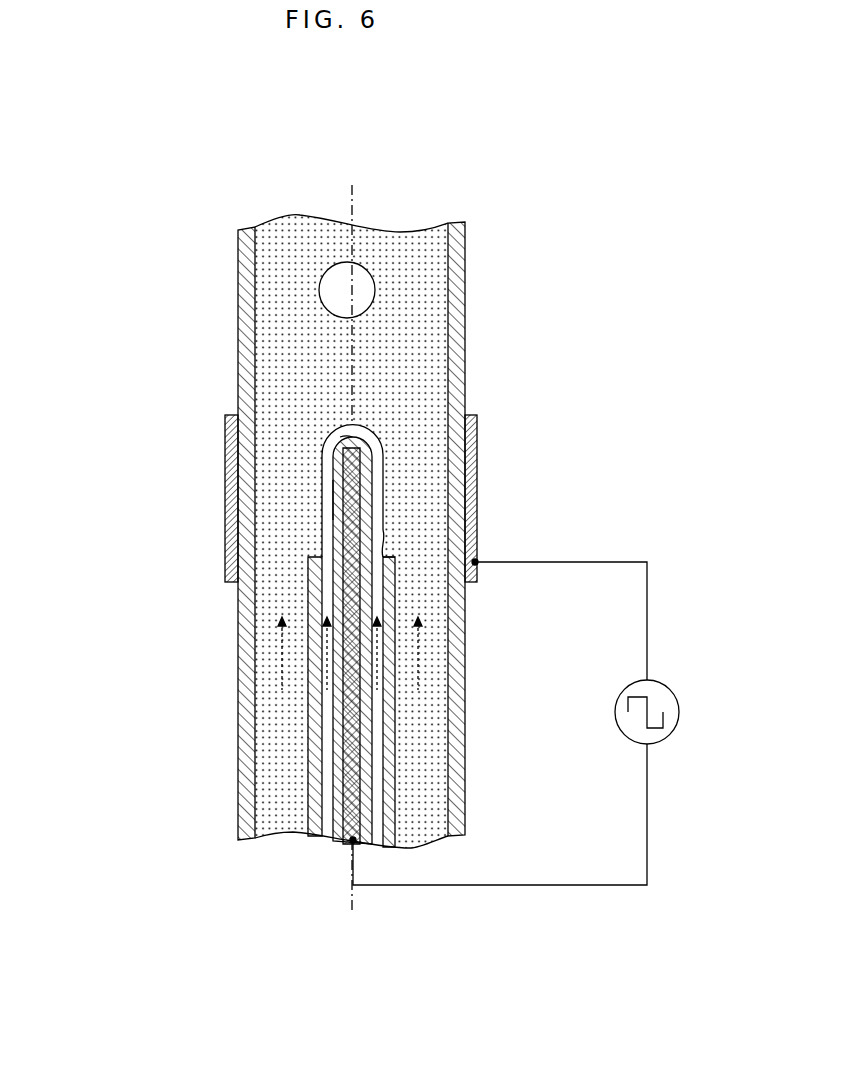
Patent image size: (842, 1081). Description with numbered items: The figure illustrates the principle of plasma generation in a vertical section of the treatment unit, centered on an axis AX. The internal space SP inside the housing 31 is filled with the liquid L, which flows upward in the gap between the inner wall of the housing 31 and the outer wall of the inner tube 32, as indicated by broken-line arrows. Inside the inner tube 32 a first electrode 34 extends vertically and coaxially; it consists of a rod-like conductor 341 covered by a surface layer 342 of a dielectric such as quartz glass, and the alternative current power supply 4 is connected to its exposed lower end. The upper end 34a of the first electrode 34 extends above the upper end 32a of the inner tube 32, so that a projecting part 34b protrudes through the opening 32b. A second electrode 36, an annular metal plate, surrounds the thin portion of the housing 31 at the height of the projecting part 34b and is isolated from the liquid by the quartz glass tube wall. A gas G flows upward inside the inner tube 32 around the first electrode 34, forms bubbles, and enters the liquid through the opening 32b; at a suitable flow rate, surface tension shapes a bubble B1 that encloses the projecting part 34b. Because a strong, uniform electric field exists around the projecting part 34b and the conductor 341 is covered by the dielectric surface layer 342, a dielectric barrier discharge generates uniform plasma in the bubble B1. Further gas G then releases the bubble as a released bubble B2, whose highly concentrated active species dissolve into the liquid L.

The axis AX is at (353, 538).
The released bubble B2 is at (317, 298).
The internal space SP is at (408, 344).
The upper end of the first electrode 34a is at (339, 436).
The bubble B1 is at (378, 440).
The projecting part 34b is at (333, 502).
The opening of the inner tube 32b is at (376, 542).
The upper end of the inner tube 32a is at (390, 553).
The second electrode 36 is at (226, 535).
The housing 31 is at (238, 617).
The first electrode 34 is at (234, 640).
The conductor 341 is at (340, 712).
The surface layer 342 is at (348, 757).
The gas G is at (327, 782).
The inner tube 32 is at (395, 718).
The liquid L is at (423, 787).
The alternative current power supply 4 is at (677, 700).